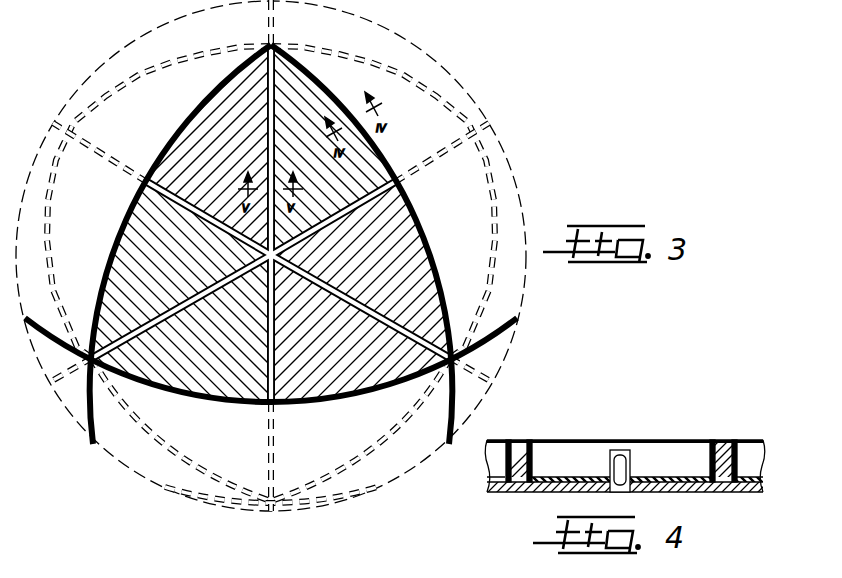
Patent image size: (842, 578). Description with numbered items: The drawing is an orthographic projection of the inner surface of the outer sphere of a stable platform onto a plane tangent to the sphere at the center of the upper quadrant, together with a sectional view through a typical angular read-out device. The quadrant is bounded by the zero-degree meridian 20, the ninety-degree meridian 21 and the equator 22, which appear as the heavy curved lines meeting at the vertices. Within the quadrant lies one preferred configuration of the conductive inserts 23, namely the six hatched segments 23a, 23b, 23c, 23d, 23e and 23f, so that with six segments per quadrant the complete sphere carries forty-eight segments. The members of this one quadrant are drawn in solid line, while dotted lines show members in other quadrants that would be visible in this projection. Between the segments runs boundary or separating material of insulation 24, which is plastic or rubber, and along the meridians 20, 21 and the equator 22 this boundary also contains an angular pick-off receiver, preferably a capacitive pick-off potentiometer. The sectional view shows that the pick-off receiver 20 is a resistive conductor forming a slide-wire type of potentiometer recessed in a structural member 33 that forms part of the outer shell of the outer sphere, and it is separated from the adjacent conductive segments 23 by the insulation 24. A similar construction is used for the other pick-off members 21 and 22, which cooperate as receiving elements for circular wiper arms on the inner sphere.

In FIG. 3, the 0° meridian 20 is at (407, 217).
In FIG. 4, the 0° meridian 20 is at (621, 450).
In FIG. 3, the 90° meridian 21 is at (127, 212).
In FIG. 3, the equator 22 is at (290, 386).
In FIG. 4, the conductive inserts 23 is at (587, 493).
In FIG. 3, the conductive insert 23a is at (200, 162).
In FIG. 3, the conductive insert 23b is at (360, 173).
In FIG. 3, the conductive insert 23c is at (147, 258).
In FIG. 3, the conductive insert 23d is at (390, 257).
In FIG. 3, the conductive insert 23e is at (205, 377).
In FIG. 3, the conductive insert 23f is at (323, 385).
In FIG. 3, the insulation 24 is at (276, 84).
In FIG. 4, the insulation 24 is at (668, 477).
In FIG. 4, the structural member 33 is at (571, 454).